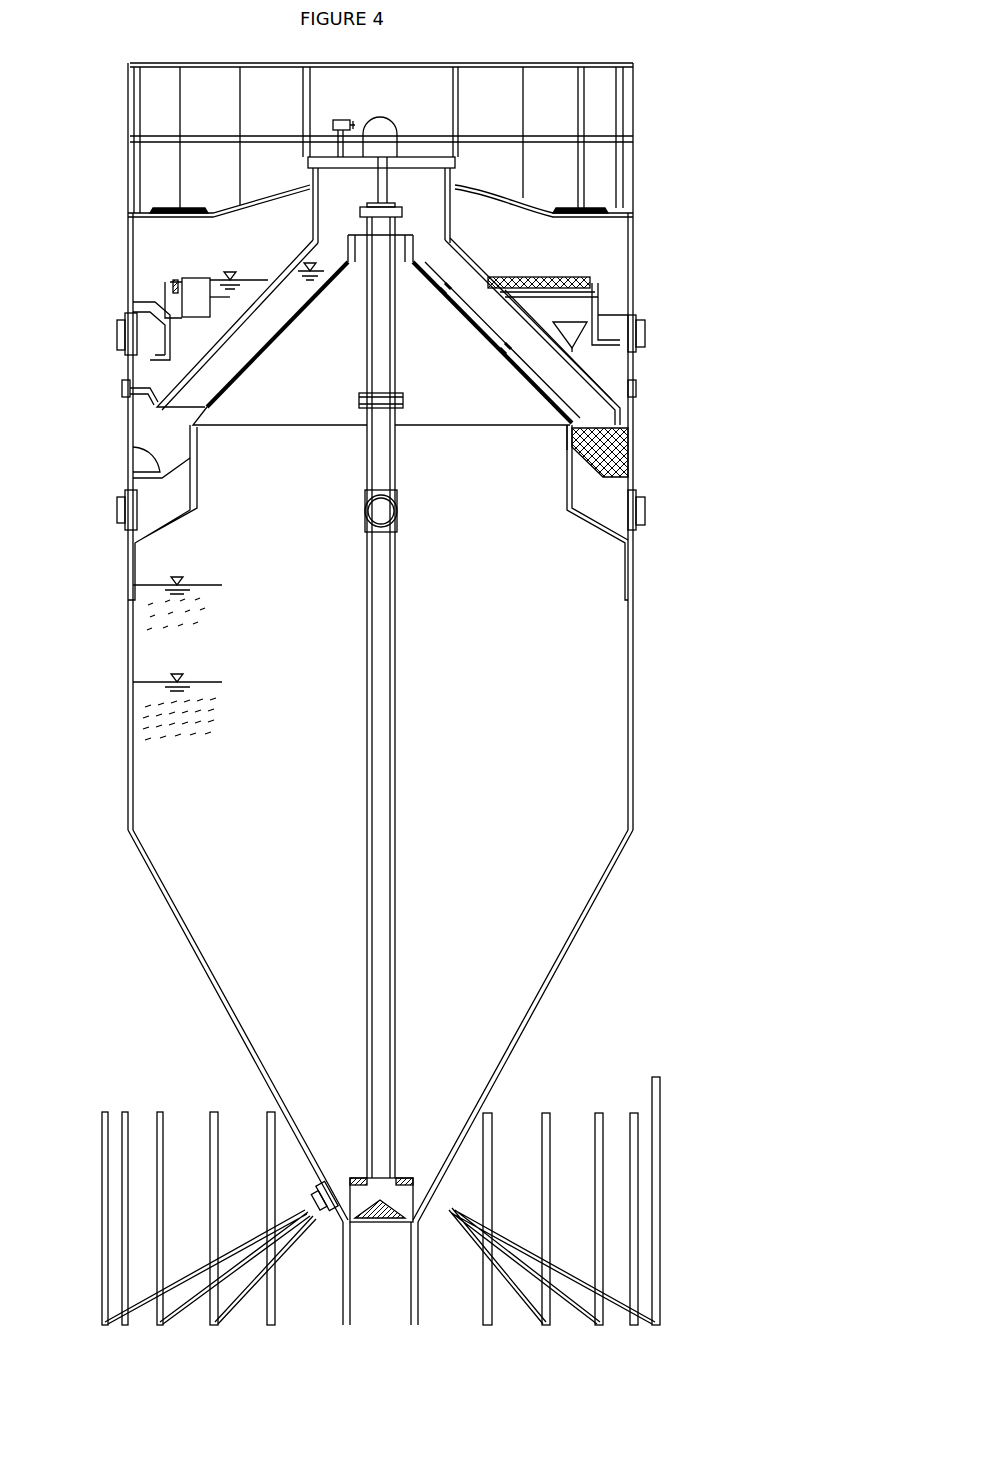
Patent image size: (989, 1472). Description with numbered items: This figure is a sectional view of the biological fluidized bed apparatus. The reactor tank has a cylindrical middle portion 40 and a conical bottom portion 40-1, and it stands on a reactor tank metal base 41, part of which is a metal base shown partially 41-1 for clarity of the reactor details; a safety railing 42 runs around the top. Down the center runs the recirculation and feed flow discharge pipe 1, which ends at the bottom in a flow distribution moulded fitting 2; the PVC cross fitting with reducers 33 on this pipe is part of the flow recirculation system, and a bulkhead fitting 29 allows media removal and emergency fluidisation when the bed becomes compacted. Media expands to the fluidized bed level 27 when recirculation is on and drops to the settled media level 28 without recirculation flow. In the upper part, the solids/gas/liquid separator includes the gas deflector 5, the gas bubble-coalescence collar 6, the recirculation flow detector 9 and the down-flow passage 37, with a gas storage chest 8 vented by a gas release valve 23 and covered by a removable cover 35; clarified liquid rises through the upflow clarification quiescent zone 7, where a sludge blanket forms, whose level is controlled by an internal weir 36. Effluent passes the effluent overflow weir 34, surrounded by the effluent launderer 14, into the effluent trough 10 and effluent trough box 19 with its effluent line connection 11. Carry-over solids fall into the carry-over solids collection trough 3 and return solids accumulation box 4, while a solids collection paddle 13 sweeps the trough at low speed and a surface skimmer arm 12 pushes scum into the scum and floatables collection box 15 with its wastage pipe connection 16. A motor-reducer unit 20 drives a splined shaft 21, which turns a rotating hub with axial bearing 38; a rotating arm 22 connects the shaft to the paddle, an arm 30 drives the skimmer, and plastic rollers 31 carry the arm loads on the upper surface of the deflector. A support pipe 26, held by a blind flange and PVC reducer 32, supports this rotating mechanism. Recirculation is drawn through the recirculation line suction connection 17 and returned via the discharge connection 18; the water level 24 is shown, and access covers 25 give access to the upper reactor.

The recirculation and feed flow discharge pipe 1 is at (396, 1082).
The flow distribution moulded fitting 2 is at (410, 1178).
The carry-over solids collection trough 3 is at (133, 448).
The return solids accumulation box 4 is at (190, 515).
The gas deflector 5 is at (278, 346).
The gas bubble-coalescence collar 6 is at (360, 248).
The upflow clarification quiescent zone 7 is at (150, 405).
The gas storage chest 8 is at (381, 205).
The recirculation flow detector 9 is at (312, 248).
The effluent trough 10 is at (128, 304).
The effluent line connection 11 is at (117, 336).
The surface skimmer arm 12 is at (556, 277).
The solids collection paddle 13 is at (628, 450).
The effluent launderer 14 is at (183, 279).
The scum and floatables collection box 15 is at (230, 270).
The scum and floatables wastage pipe connection 16 is at (122, 388).
The recirculation line suction connection 17 is at (117, 510).
The recirculation line discharge connection 18 is at (398, 512).
The effluent trough box 19 is at (645, 333).
The motor-reducer unit 20 is at (375, 118).
The power transmission mechanism 21 is at (392, 200).
The rotating arm 22 is at (440, 252).
The gas release valve 23 is at (345, 118).
The water level 24 is at (212, 213).
The access covers 25 is at (603, 207).
The support pipe 26 is at (396, 297).
The fluidized bed level 27 is at (175, 580).
The settled media level 28 is at (175, 678).
The bulkhead fitting for media removal 29 is at (335, 1180).
The arm driving surface skimmer 30 is at (620, 415).
The plastic rollers 31 is at (515, 365).
The blind flange and PVC reducer 32 is at (359, 400).
The PVC cross fitting with reducers 33 is at (366, 500).
The effluent overflow weir 34 is at (600, 294).
The removable cover 35 is at (327, 150).
The internal weir for sludge blanket level control 36 is at (637, 388).
The down-flow passage of separator 37 is at (208, 385).
The rotating hub with axial bearing 38 is at (447, 188).
The reactor tank cylindrical middle portion 40 is at (633, 740).
The reactor tank conical bottom portion 40-1 is at (603, 897).
The reactor tank metal base 41 is at (660, 1137).
The metal base shown partially 41-1 is at (660, 1165).
The safety railing 42 is at (633, 112).